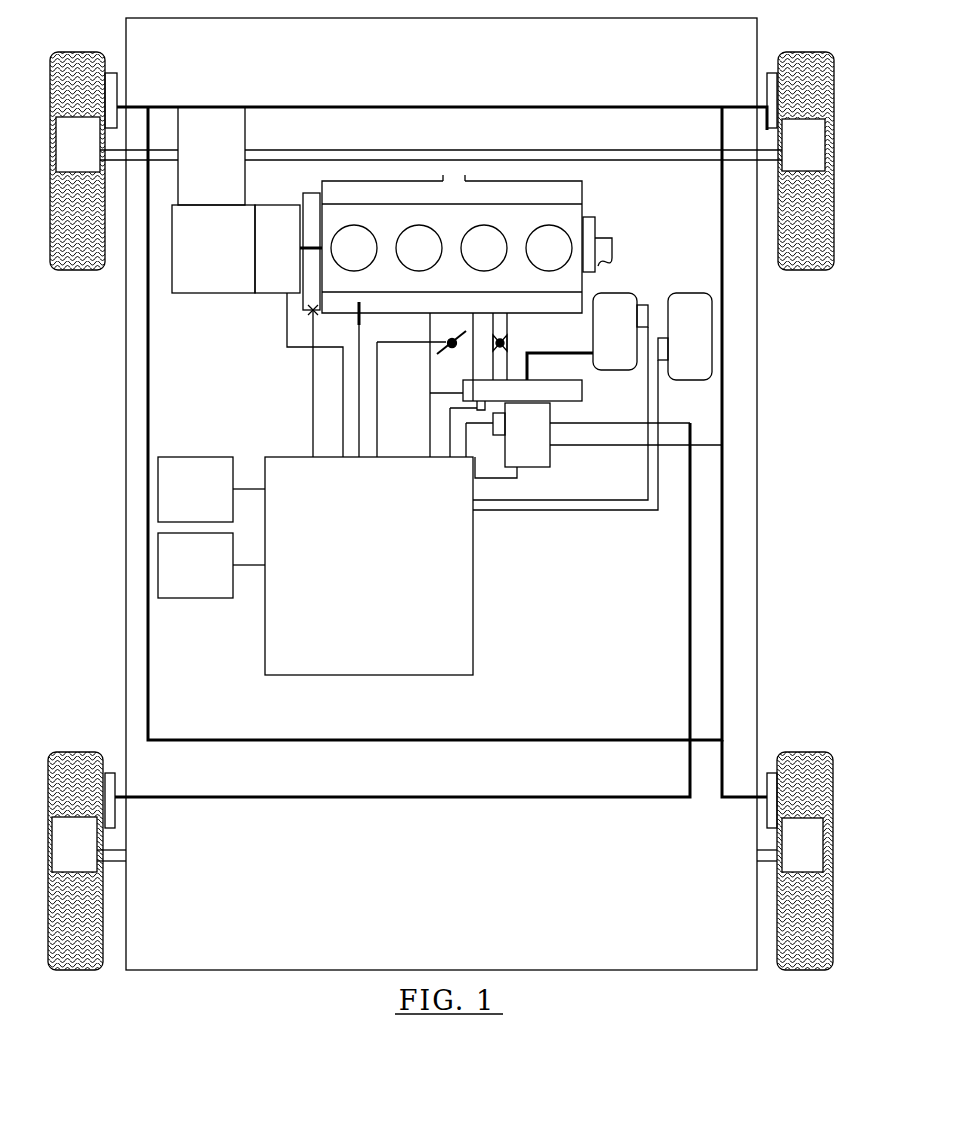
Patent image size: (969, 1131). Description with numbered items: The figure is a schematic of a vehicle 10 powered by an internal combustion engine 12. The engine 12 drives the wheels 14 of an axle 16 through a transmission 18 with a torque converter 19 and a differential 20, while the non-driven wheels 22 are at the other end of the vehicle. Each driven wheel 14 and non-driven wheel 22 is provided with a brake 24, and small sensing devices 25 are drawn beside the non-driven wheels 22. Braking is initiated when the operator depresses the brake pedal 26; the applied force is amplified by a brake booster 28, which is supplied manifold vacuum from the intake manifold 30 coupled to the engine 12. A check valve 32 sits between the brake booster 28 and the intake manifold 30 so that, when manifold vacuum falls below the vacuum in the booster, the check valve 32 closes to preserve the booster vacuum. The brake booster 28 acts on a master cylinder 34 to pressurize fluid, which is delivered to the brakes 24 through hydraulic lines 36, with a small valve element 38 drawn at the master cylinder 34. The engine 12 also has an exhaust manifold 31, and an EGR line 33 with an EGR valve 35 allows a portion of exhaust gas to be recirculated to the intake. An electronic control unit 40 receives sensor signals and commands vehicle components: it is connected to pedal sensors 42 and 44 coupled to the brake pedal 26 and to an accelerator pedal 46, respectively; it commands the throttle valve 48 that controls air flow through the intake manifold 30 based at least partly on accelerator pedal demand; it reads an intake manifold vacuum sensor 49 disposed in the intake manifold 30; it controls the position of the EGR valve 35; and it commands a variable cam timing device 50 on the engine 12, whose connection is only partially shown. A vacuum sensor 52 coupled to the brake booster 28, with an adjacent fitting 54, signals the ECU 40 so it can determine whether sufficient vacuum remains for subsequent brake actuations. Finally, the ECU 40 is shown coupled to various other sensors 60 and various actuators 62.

The vehicle 10 is at (188, 940).
The internal combustion engine 12 is at (376, 282).
The wheels 14 is at (66, 161).
The axle 16 is at (485, 148).
The transmission 18 is at (201, 284).
The torque converter 19 is at (265, 274).
The differential 20 is at (199, 168).
The non-driven wheels 22 is at (63, 859).
The brake 24 is at (110, 73).
The rear wheel speed sensors 25 is at (110, 773).
The brake pedal 26 is at (603, 350).
The brake booster 28 is at (582, 392).
The intake manifold 30 is at (436, 315).
The exhaust manifold 31 is at (443, 203).
The check valve 32 is at (508, 344).
The EGR line 33 is at (308, 192).
The master cylinder 34 is at (515, 444).
The EGR valve 35 is at (307, 312).
The hydraulic lines 36 is at (722, 138).
The fuel valve 38 is at (498, 432).
The electronic control unit 40 is at (352, 638).
The pedal sensor 42 is at (643, 312).
The pedal sensor 44 is at (663, 340).
The accelerator pedal 46 is at (678, 354).
The throttle valve 48 is at (448, 341).
The intake manifold vacuum sensor 49 is at (356, 318).
The variable cam timing device 50 is at (595, 217).
The vacuum sensor 52 is at (463, 389).
The fuel pressure sensor 54 is at (480, 408).
The sensors 60 is at (183, 500).
The actuators 62 is at (183, 577).